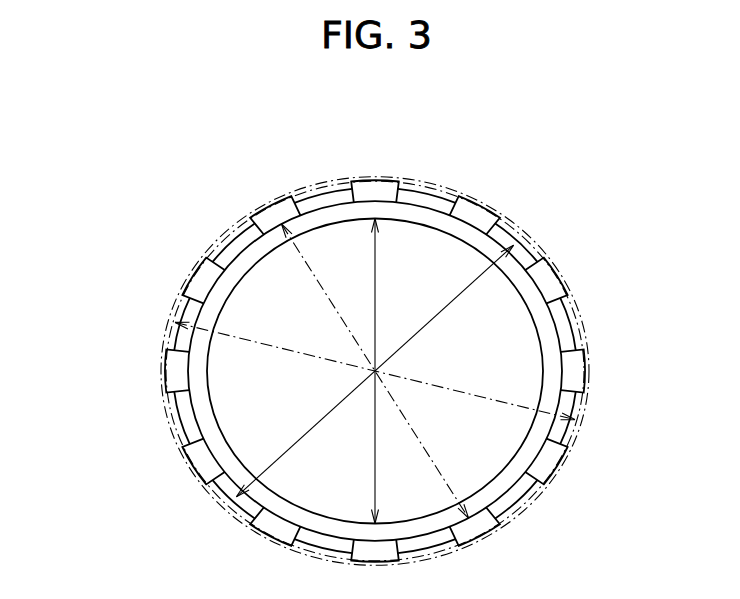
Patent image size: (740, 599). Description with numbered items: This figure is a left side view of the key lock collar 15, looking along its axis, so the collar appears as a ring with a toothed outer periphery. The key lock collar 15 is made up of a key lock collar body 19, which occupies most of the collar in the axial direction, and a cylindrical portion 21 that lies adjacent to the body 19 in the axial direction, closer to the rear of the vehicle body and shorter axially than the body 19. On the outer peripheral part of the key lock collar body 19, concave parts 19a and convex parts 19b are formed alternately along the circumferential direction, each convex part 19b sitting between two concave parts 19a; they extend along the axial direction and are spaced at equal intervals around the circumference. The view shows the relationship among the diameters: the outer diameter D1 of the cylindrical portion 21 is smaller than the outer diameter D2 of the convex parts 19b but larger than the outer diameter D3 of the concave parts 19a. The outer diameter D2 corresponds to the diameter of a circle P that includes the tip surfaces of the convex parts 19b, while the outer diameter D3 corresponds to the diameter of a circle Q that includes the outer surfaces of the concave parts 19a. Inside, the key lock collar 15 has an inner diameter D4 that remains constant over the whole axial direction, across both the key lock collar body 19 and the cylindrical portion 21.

The key lock collar 15 is at (337, 122).
The key lock collar body 19 is at (258, 208).
The concave parts 19a is at (170, 417).
The convex parts 19b is at (553, 478).
The cylindrical portion 21 is at (328, 196).
The circle P is at (582, 332).
The circle Q is at (559, 273).
The outer diameter of the cylindrical portion D1 is at (374, 371).
The outer diameter of the convex parts D2 is at (375, 370).
The outer diameter of the concave parts D3 is at (373, 371).
The inner diameter D4 is at (356, 371).